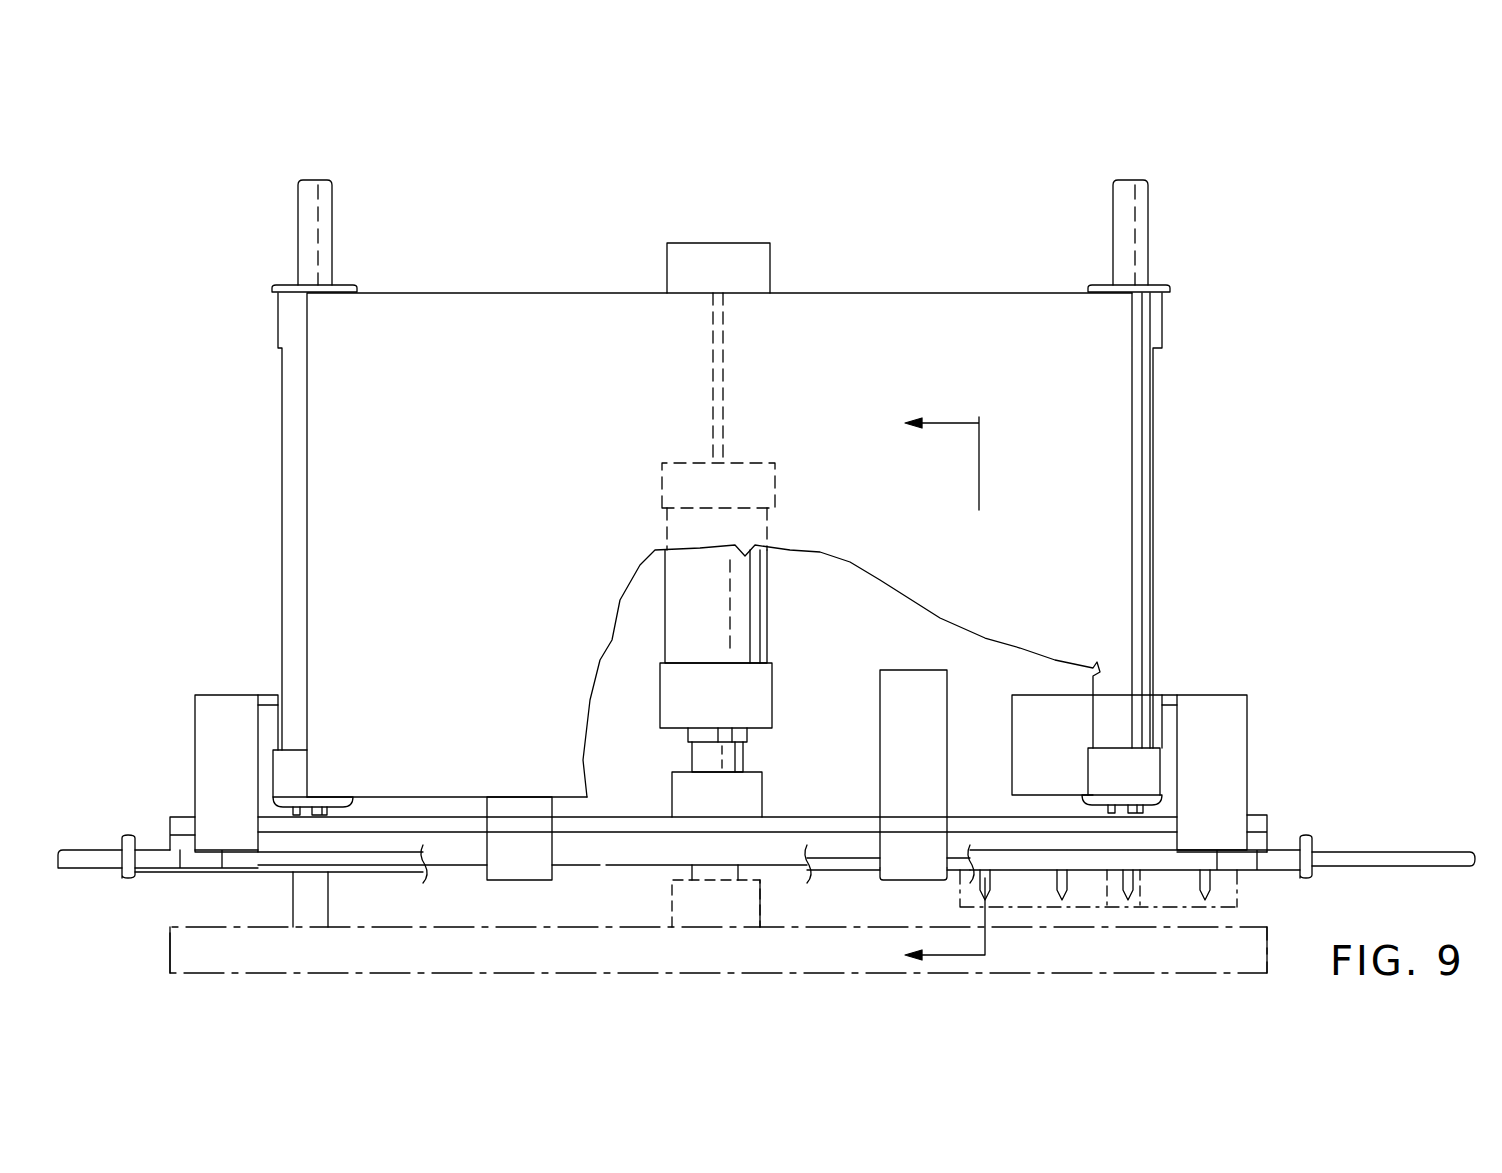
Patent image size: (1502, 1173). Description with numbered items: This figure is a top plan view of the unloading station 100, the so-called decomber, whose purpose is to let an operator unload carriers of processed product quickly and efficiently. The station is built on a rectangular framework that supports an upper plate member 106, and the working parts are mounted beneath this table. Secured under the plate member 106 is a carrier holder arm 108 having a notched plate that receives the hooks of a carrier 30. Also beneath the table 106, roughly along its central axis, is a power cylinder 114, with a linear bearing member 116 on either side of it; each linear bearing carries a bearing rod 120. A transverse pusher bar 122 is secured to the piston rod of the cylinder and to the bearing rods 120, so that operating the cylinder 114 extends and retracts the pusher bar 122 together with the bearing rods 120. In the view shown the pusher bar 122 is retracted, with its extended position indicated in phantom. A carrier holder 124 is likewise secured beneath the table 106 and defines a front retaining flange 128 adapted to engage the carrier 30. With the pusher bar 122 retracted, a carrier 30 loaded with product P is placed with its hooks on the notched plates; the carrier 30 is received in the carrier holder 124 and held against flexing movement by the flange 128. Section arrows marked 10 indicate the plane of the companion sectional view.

The unloading station 100 is at (1283, 390).
The upper plate member 106 is at (580, 481).
The carrier holder arm 108 is at (215, 742).
The power cylinder 114 is at (745, 612).
The linear bearing member 116 is at (290, 470).
The bearing rod 120 is at (318, 228).
The pusher bar 122 is at (603, 850).
The carrier holder 124 is at (905, 740).
The front retaining flange 128 is at (893, 880).
The carrier 30 is at (1288, 822).
The section line 10 is at (936, 674).
The product P is at (1160, 890).